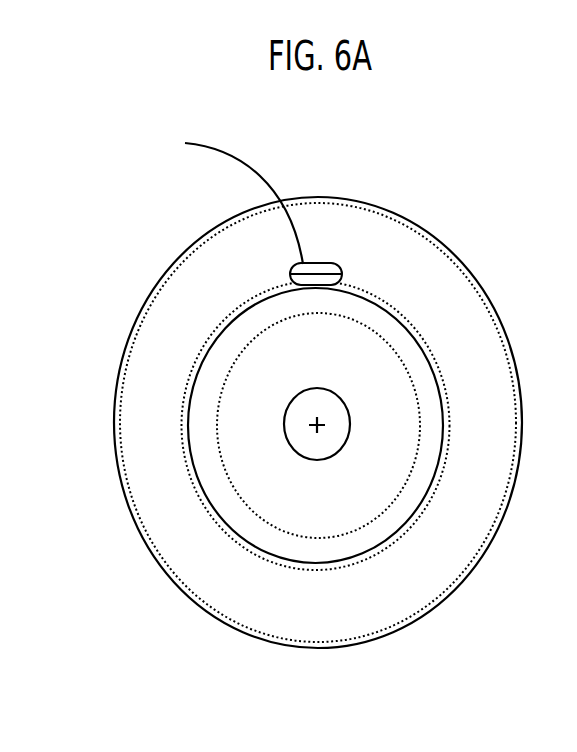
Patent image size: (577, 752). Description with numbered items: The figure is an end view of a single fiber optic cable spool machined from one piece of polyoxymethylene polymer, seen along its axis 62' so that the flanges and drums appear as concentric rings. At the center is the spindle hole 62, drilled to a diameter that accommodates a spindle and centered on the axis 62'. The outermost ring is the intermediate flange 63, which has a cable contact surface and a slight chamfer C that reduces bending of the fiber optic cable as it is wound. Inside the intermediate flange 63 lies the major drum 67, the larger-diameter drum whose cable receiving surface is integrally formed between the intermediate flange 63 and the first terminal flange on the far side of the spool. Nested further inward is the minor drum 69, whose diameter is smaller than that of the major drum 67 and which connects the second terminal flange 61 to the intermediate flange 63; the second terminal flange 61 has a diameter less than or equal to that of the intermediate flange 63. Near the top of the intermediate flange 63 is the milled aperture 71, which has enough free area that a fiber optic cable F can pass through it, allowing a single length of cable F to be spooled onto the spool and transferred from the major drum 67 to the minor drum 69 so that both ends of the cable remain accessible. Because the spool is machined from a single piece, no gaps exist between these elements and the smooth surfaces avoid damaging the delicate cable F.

The intermediate flange 63 is at (502, 430).
The chamfer C is at (147, 306).
The major drum 67 is at (425, 332).
The second terminal flange 61 is at (405, 505).
The minor drum 69 is at (218, 432).
The spindle hole 62 is at (317, 448).
The axis 62' is at (349, 392).
The aperture 71 is at (322, 263).
The fiber optic cable F is at (230, 150).